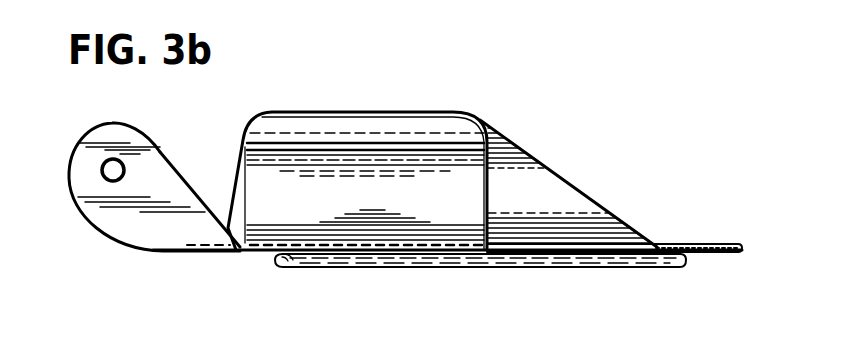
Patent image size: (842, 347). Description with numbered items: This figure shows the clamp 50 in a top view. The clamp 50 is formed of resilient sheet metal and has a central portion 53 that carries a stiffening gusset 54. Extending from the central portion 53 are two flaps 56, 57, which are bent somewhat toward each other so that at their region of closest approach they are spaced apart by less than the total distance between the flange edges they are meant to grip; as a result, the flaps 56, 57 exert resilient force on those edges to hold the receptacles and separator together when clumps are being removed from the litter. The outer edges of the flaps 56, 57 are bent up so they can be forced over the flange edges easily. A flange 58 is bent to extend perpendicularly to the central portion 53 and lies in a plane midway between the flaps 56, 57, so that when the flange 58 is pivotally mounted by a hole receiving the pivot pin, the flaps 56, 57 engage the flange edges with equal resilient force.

The clamp 50 is at (674, 238).
The central portion 53 is at (555, 256).
The stiffening gusset 54 is at (628, 267).
The flap 56 is at (478, 123).
The flap 57 is at (538, 180).
The flange 58 is at (158, 163).